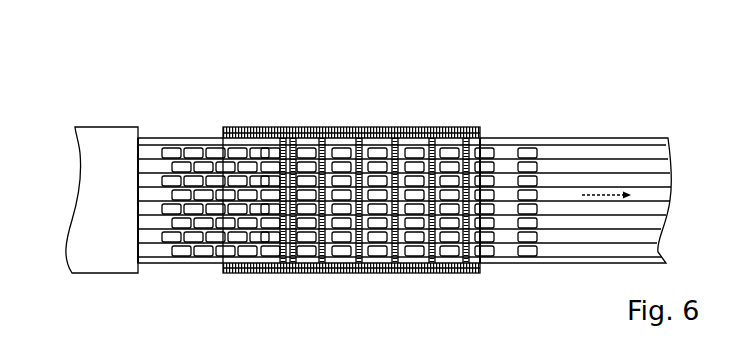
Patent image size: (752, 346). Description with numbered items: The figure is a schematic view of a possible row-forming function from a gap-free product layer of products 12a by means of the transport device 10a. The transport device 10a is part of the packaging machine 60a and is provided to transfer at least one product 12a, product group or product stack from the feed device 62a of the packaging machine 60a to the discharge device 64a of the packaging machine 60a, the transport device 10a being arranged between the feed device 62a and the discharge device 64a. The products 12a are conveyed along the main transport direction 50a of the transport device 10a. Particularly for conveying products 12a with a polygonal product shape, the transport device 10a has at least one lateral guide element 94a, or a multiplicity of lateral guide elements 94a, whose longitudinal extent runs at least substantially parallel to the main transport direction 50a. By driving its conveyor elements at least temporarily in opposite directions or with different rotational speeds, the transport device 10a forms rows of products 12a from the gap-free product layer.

The transport device 10a is at (410, 117).
The product 12a is at (302, 147).
The main transport direction 50a is at (607, 183).
The packaging machine 60a is at (77, 86).
The feed device 62a is at (135, 107).
The discharge device 64a is at (545, 114).
The lateral guide element 94a is at (653, 145).